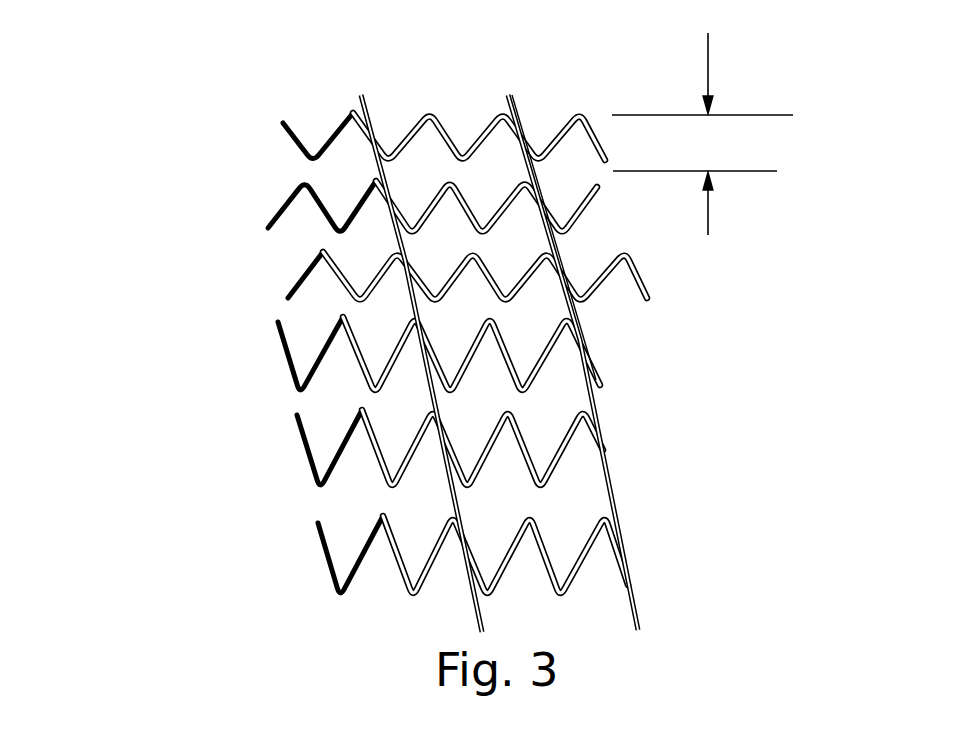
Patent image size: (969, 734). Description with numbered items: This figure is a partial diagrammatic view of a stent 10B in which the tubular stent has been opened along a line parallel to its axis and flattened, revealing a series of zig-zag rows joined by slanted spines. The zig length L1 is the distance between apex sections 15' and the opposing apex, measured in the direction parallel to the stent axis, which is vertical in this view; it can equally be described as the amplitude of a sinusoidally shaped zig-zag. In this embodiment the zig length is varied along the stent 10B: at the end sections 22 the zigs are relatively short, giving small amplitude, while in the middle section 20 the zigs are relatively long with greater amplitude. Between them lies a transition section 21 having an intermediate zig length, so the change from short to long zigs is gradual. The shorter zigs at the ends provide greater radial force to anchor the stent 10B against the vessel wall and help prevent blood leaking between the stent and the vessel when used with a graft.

The stent 10B is at (397, 82).
The apex section 15' is at (433, 341).
The middle section 20 is at (310, 602).
The transition section 21 is at (277, 406).
The end section 22 is at (277, 300).
The zig length L1 is at (702, 117).